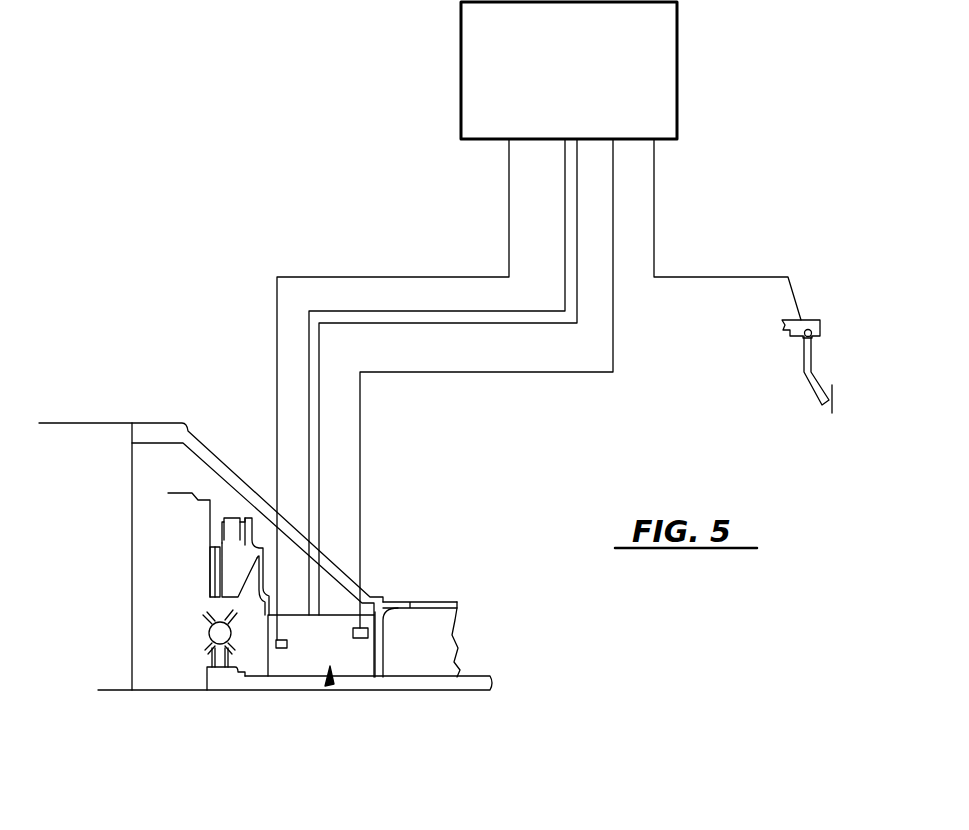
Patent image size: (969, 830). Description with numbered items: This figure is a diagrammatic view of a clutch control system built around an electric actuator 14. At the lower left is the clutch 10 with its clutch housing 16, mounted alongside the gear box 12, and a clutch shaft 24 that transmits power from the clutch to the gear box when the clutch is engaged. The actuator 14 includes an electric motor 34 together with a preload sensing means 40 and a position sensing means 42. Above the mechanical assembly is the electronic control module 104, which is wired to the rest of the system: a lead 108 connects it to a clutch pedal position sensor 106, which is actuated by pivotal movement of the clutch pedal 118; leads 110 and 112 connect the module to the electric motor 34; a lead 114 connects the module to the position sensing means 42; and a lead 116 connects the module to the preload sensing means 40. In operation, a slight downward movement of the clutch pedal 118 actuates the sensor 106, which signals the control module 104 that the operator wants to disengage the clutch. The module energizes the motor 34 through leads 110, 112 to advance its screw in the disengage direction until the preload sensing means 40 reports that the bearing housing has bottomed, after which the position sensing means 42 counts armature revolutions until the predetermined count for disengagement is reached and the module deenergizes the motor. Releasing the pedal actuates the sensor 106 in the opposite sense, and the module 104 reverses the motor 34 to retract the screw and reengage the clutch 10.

The clutch 10 is at (190, 563).
The gear box 12 is at (447, 652).
The actuator 14 is at (328, 686).
The clutch housing 16 is at (229, 473).
The clutch shaft 24 is at (453, 685).
The motor 34 is at (303, 665).
The preload sensing means 40 is at (289, 644).
The position sensing means 42 is at (362, 638).
The electronic control module 104 is at (667, 83).
The clutch pedal position sensor 106 is at (812, 319).
The lead 108 is at (654, 203).
The lead 110 is at (504, 311).
The lead 112 is at (503, 323).
The lead 114 is at (505, 372).
The lead 116 is at (428, 277).
The clutch pedal 118 is at (836, 402).